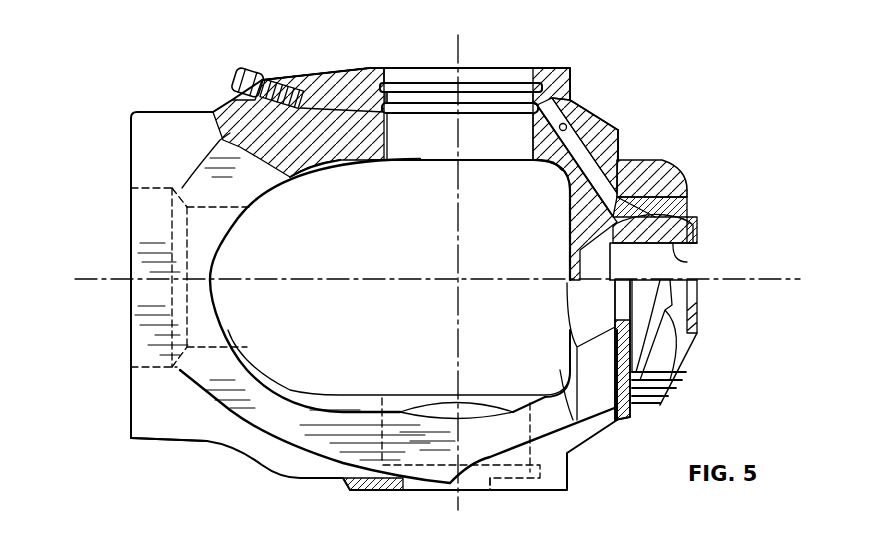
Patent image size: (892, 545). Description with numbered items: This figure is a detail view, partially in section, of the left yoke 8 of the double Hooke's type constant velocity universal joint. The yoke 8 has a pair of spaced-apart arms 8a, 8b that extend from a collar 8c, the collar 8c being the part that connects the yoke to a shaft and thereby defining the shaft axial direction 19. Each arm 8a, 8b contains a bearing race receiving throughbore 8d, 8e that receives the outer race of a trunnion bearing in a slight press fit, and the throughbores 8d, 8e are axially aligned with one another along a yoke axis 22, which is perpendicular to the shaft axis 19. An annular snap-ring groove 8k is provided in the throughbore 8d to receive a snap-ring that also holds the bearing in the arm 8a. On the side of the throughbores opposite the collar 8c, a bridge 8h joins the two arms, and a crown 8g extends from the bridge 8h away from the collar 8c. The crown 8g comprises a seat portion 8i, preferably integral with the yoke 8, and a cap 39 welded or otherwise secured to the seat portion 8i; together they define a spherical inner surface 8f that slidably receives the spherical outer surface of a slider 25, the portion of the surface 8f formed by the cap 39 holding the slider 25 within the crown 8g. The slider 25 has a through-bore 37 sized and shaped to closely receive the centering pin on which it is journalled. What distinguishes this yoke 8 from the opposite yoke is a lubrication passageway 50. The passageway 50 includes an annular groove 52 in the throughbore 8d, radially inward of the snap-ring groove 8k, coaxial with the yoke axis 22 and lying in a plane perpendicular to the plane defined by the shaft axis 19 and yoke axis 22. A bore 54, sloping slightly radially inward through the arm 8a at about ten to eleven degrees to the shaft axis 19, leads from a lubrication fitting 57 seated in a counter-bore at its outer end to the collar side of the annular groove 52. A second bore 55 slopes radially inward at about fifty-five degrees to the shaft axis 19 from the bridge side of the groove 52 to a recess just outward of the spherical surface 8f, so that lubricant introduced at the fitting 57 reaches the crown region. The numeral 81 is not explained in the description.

The yoke 8 is at (152, 102).
The arm 8a is at (327, 165).
The arm 8b is at (503, 394).
The collar 8c is at (163, 444).
The bearing race receiving throughbore 8d is at (398, 162).
The bearing race receiving throughbore 8e is at (396, 404).
The spherical inner surface 8f is at (655, 238).
The crown 8g is at (656, 158).
The bridge 8h is at (568, 213).
The seat portion 8i is at (647, 205).
The annular groove 8k is at (402, 83).
The shaft axial direction 19 is at (287, 282).
The yoke axis 22 is at (459, 177).
The slider 25 is at (690, 229).
The through-bore 37 is at (680, 255).
The cap 39 is at (665, 176).
The lubrication passageway 50 is at (425, 92).
The annular groove 52 is at (477, 110).
The bore 54 is at (313, 95).
The bore 55 is at (568, 127).
The lubrication fitting 57 is at (247, 75).
The hidden passage 81 is at (493, 490).